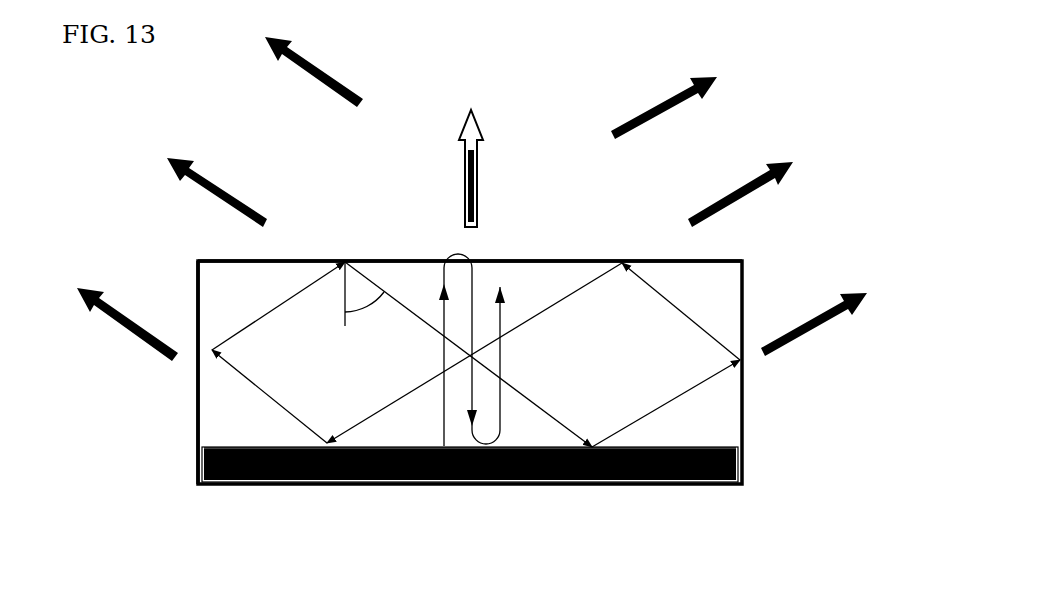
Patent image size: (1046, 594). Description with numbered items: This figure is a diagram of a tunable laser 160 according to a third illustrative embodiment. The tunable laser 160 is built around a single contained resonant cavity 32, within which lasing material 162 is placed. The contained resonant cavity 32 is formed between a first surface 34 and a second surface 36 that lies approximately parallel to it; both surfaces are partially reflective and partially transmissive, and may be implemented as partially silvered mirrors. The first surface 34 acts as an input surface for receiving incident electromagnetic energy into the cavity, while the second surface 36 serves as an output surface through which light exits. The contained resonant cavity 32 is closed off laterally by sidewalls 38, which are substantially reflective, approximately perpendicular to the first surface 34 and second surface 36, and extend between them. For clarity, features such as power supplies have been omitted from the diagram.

The contained resonant cavity 32 is at (644, 356).
The first surface 34 is at (585, 262).
The second surface 36 is at (688, 485).
The sidewalls 38 is at (200, 305).
The tunable laser 160 is at (766, 120).
The lasing material 162 is at (588, 450).